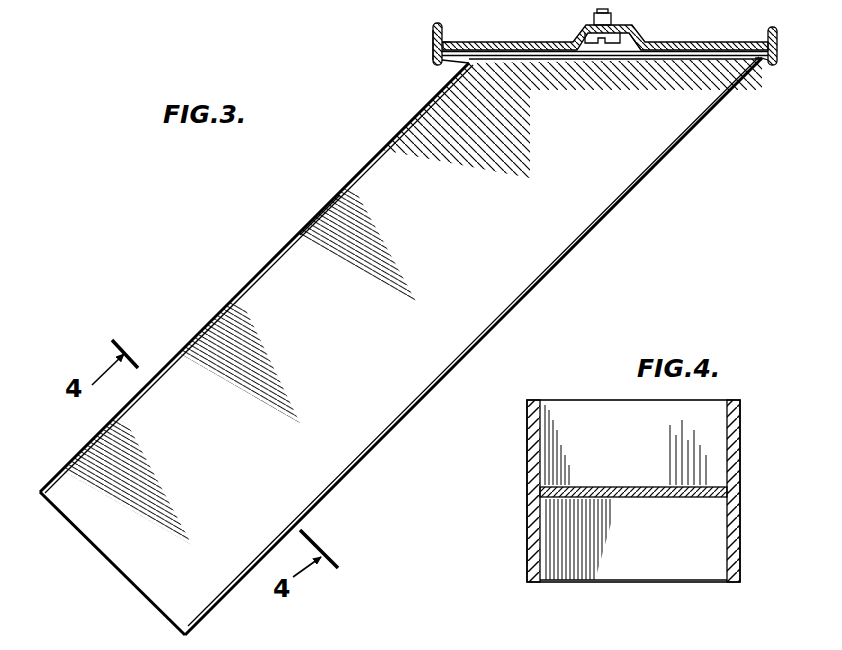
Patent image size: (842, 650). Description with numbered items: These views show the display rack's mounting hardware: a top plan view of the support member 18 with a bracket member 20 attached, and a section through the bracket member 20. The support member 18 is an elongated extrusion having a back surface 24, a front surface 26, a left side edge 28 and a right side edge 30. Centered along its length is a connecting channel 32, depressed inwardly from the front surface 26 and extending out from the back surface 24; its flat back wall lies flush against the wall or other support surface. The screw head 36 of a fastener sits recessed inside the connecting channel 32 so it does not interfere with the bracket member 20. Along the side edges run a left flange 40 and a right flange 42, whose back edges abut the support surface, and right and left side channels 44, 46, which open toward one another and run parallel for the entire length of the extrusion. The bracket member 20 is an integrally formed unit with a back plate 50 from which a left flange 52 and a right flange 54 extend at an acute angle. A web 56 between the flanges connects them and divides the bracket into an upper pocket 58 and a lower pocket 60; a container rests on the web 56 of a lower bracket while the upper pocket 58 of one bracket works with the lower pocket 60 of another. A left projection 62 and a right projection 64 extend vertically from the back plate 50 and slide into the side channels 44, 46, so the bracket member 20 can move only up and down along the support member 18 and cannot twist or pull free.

In FIG. 3, the support member 18 is at (671, 31).
In FIG. 3, the bracket member 20 is at (641, 190).
In FIG. 4, the bracket member 20 is at (525, 477).
In FIG. 3, the back surface 24 is at (538, 42).
In FIG. 3, the front surface 26 is at (540, 60).
In FIG. 3, the left side edge 28 is at (433, 44).
In FIG. 3, the right side edge 30 is at (778, 47).
In FIG. 3, the connecting channel 32 is at (632, 46).
In FIG. 3, the screw head 36 is at (589, 44).
In FIG. 3, the left flange 40 is at (437, 24).
In FIG. 3, the right flange 42 is at (772, 30).
In FIG. 3, the right side channel 44 is at (443, 49).
In FIG. 3, the left side channel 46 is at (767, 66).
In FIG. 3, the back plate 50 is at (548, 52).
In FIG. 4, the back plate 50 is at (682, 550).
In FIG. 4, the left flange 52 is at (527, 543).
In FIG. 3, the right flange 54 is at (548, 275).
In FIG. 4, the right flange 54 is at (737, 553).
In FIG. 3, the web 56 is at (136, 548).
In FIG. 4, the web 56 is at (664, 483).
In FIG. 4, the upper pocket 58 is at (575, 427).
In FIG. 4, the lower pocket 60 is at (640, 549).
In FIG. 3, the left projection 62 is at (452, 62).
In FIG. 3, the right projection 64 is at (758, 60).